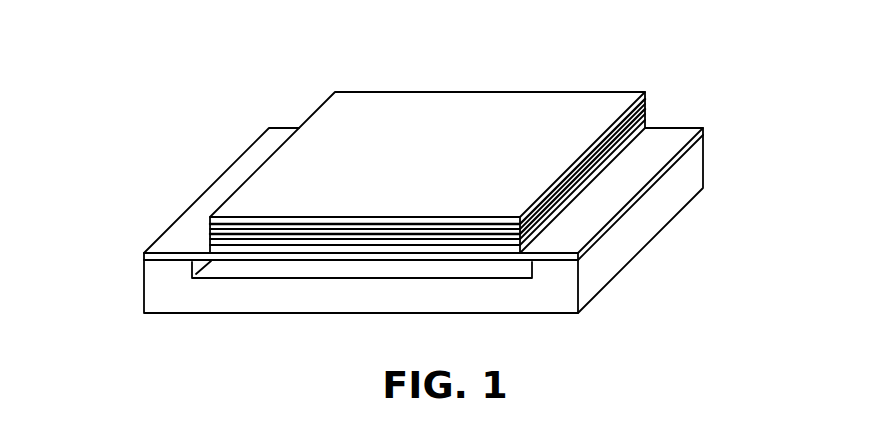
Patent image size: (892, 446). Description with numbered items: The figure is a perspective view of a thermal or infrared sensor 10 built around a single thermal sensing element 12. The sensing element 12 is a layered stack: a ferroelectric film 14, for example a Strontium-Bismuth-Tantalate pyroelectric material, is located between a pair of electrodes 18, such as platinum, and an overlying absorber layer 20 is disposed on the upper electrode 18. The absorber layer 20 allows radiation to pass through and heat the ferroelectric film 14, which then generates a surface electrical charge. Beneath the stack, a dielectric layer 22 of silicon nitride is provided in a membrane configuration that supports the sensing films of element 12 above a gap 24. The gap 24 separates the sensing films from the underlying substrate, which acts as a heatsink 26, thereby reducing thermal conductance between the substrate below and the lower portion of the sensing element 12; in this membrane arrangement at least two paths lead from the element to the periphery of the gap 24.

The thermal sensor 10 is at (193, 86).
The thermal sensing element 12 is at (344, 86).
The ferroelectric film 14 is at (640, 118).
The electrodes 18 is at (645, 110).
The absorber layer 20 is at (603, 101).
The dielectric layer 22 is at (658, 185).
The gap 24 is at (252, 268).
The heatsink 26 is at (553, 295).